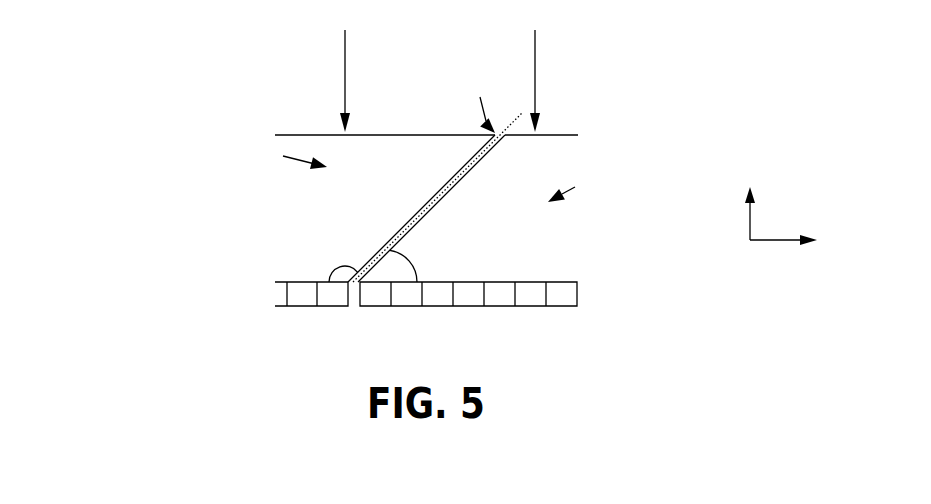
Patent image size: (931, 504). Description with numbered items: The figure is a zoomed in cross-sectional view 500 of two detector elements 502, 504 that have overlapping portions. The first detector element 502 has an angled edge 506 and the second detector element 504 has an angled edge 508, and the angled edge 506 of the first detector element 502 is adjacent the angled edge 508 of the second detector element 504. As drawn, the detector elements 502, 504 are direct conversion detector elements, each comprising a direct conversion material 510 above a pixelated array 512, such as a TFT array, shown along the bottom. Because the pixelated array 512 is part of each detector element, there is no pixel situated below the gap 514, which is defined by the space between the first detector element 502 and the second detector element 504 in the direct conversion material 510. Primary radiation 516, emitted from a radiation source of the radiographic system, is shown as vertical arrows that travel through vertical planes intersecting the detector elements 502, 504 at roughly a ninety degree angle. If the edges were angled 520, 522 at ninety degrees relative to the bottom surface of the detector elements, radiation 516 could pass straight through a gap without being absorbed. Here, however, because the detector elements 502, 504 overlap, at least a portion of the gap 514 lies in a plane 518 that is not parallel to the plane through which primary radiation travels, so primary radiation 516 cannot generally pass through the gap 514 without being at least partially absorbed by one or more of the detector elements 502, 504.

The zoomed in cross-sectional view 500 is at (169, 26).
The first detector element 502 is at (302, 135).
The second detector element 504 is at (553, 135).
The angled edge of first detector element 506 is at (433, 197).
The angled edge of second detector element 508 is at (418, 222).
The direct conversion material 510 is at (597, 184).
The pixelated array 512 is at (300, 306).
The gap 514 is at (480, 97).
The primary radiation 516 is at (345, 63).
The plane 518 is at (513, 120).
The angle of first detector element edge 520 is at (335, 266).
The angle of second detector element edge 522 is at (410, 262).